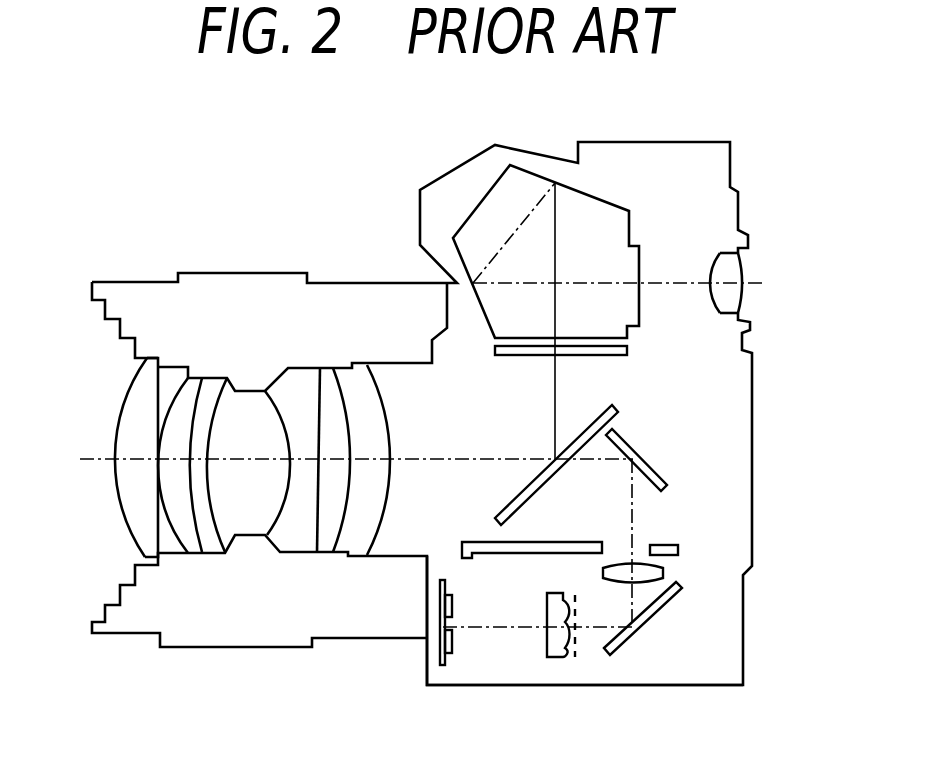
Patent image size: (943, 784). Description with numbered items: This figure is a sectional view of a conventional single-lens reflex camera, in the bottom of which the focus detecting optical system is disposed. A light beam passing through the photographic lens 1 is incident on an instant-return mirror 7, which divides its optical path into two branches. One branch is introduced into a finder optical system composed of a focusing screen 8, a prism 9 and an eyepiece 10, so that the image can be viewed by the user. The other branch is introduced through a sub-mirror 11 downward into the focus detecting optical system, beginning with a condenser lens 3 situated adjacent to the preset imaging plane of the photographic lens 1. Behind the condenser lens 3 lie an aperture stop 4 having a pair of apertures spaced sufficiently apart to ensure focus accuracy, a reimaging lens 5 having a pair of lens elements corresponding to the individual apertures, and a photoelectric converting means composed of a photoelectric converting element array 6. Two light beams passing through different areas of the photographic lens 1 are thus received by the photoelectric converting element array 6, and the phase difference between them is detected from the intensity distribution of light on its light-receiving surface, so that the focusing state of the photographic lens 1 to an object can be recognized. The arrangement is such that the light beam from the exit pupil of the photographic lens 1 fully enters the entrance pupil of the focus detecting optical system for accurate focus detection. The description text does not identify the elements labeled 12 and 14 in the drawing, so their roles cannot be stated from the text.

The photographic lens 1 is at (362, 572).
The condenser lens 3 is at (663, 573).
The aperture stop 4 is at (577, 655).
The reimaging lens 5 is at (553, 658).
The photoelectric converting element array 6 is at (445, 662).
The instant-return mirror 7 is at (618, 407).
The focusing screen 8 is at (627, 350).
The prism 9 is at (600, 198).
The eyepiece 10 is at (742, 263).
The sub-mirror 11 is at (653, 468).
The camera body 12 is at (415, 543).
The reflecting mirror 14 is at (653, 613).